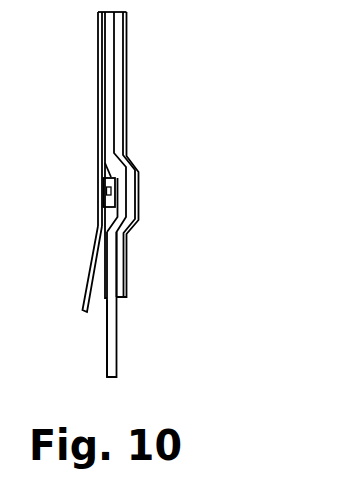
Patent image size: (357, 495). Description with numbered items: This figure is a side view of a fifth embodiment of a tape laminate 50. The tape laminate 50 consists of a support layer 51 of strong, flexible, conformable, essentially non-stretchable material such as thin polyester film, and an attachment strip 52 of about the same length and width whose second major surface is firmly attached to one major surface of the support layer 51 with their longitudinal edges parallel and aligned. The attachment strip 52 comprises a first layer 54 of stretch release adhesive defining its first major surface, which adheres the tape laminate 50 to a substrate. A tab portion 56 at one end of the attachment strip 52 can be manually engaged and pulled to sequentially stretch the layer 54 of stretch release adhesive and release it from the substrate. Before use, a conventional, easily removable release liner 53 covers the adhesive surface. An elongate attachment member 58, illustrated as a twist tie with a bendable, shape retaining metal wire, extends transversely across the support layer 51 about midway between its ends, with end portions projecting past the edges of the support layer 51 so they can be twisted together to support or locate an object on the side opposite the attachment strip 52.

The tape laminate 50 is at (158, 66).
The support layer 51 is at (122, 117).
The attachment strip 52 is at (108, 310).
The release liner 53 is at (88, 279).
The first layer of stretch release adhesive 54 is at (104, 93).
The tab portion 56 is at (117, 358).
The attachment member 58 is at (105, 179).